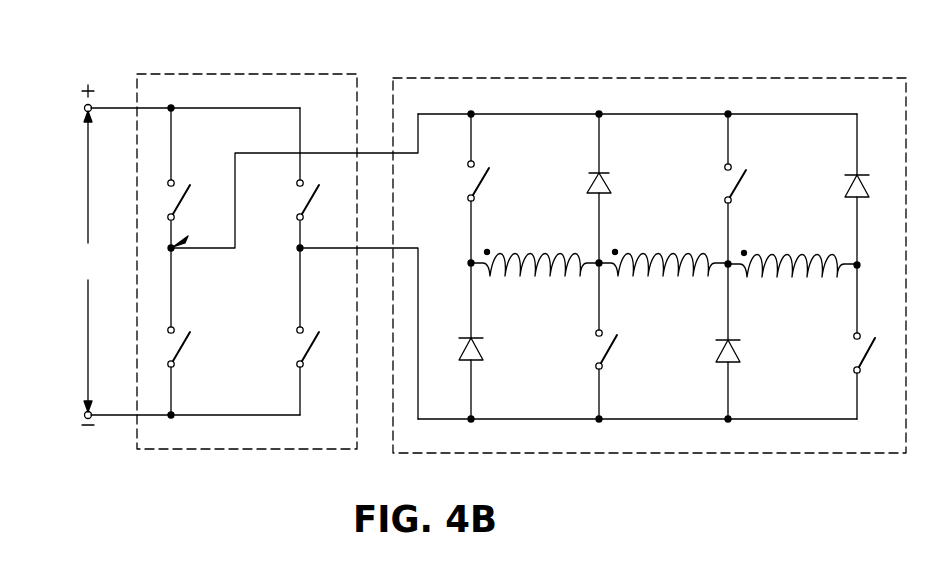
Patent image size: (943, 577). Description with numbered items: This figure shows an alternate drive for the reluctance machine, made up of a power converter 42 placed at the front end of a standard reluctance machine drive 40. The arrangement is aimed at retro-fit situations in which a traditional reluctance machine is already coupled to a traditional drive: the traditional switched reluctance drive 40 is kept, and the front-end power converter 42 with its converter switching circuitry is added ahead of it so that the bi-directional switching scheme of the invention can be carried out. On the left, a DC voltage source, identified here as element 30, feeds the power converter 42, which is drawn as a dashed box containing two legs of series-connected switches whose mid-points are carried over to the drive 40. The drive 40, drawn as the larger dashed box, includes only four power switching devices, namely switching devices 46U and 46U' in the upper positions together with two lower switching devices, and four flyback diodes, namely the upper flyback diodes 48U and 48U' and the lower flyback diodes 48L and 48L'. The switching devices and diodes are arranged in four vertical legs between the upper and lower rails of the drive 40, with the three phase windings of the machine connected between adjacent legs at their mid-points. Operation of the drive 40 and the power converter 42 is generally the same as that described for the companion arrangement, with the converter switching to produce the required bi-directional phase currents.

The DC voltage source 30 is at (70, 236).
The power converter 42 is at (265, 66).
The reluctance machine drive 40 is at (649, 237).
The power switching device 46U is at (500, 198).
The flyback diode 48U is at (624, 166).
The power switching device 46U' is at (758, 200).
The flyback diode 48U' is at (830, 169).
The flyback diode 48L is at (494, 336).
The flyback diode 48L' is at (754, 337).